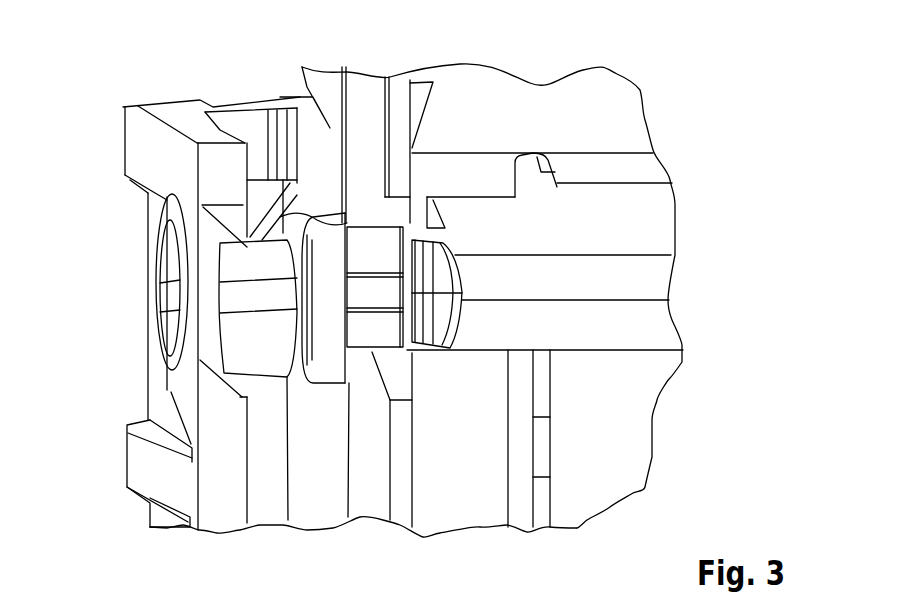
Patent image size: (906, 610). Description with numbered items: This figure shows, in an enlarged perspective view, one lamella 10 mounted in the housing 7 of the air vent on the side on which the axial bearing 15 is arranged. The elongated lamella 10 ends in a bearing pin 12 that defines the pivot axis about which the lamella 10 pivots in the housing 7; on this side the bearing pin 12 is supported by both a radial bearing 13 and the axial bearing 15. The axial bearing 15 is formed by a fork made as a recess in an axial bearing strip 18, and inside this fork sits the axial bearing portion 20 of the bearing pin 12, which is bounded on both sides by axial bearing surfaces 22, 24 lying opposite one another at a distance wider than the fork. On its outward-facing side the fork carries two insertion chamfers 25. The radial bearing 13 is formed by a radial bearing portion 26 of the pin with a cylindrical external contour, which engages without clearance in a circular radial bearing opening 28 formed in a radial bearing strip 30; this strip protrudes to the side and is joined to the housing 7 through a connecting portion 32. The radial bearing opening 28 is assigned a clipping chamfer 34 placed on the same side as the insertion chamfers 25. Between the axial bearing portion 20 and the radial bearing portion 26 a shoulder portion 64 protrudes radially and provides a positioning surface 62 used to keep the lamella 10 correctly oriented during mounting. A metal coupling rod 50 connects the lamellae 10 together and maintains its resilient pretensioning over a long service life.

The housing 7 is at (310, 497).
The lamella 10 is at (612, 227).
The bearing pin 12 is at (160, 295).
The radial bearing 13 is at (187, 203).
The axial bearing 15 is at (354, 175).
The axial bearing strip 18 is at (405, 502).
The axial bearing portion 20 is at (382, 290).
The axial bearing surface 22 is at (427, 256).
The axial bearing surface 24 is at (315, 220).
The insertion chamfer 25 is at (350, 226).
The radial bearing portion 26 is at (253, 295).
The radial bearing opening 28 is at (177, 230).
The radial bearing strip 30 is at (150, 150).
The connecting portion 32 is at (217, 107).
The clipping chamfer 34 is at (210, 357).
The coupling rod 50 is at (548, 451).
The positioning surface 62 is at (298, 200).
The shoulder portion 64 is at (320, 303).